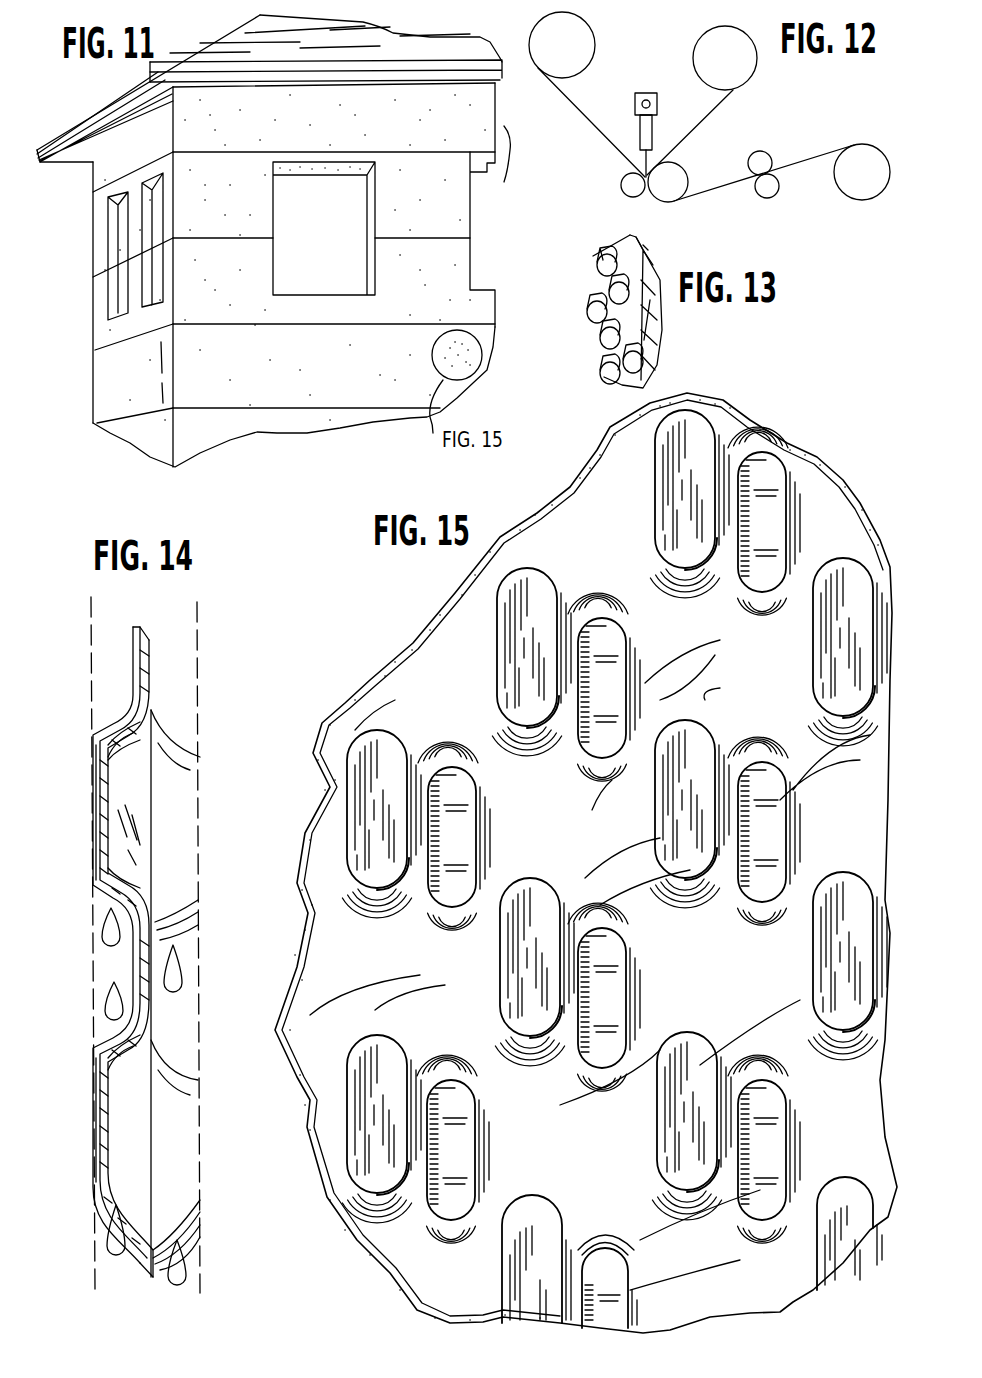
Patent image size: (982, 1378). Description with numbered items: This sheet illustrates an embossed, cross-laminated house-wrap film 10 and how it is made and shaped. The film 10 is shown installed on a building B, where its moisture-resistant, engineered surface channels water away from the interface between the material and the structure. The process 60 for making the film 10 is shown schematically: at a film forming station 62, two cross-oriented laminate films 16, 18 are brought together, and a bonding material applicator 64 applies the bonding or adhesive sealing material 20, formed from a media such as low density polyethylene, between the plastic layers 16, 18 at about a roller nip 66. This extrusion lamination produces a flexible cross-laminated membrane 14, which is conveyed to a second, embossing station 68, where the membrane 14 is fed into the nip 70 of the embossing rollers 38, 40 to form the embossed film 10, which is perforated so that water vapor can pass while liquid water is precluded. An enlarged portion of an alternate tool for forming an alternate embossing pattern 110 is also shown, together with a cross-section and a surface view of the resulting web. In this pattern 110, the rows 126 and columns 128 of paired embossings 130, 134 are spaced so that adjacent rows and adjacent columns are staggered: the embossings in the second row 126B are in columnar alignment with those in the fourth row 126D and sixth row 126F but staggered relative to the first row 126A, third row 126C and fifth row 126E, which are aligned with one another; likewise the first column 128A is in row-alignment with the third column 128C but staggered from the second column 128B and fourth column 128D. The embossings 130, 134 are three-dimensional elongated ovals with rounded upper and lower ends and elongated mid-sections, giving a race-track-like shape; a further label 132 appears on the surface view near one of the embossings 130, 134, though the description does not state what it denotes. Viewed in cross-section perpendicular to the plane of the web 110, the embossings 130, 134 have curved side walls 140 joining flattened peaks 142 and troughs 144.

In FIG. 11, the embossed cross-laminated film 10 is at (121, 336).
In FIG. 12, the embossed cross-laminated film 10 is at (807, 155).
In FIG. 11, the cross-laminated membrane 14 is at (159, 356).
In FIG. 11, the building B is at (508, 169).
In FIG. 12, the cross-oriented laminate film 16 is at (577, 107).
In FIG. 12, the cross-oriented laminate film 18 is at (712, 120).
In FIG. 12, the bonding material 20 is at (637, 153).
In FIG. 12, the embossing roller 38 is at (763, 157).
In FIG. 12, the embossing roller 40 is at (775, 197).
In FIG. 12, the process 60 is at (640, 70).
In FIG. 12, the station 62 is at (660, 86).
In FIG. 12, the bonding material applicator 64 is at (653, 127).
In FIG. 12, the roller nip 66 is at (640, 197).
In FIG. 12, the embossing station 68 is at (792, 138).
In FIG. 12, the nip 70 is at (720, 187).
In FIG. 15, the alternate embossing pattern 110 is at (775, 404).
In FIG. 15, the rows 126 is at (492, 613).
In FIG. 15, the first row 126A is at (643, 527).
In FIG. 15, the second row 126B is at (490, 692).
In FIG. 15, the third row 126C is at (342, 815).
In FIG. 15, the fourth row 126D is at (502, 967).
In FIG. 15, the fifth row 126E is at (348, 1117).
In FIG. 15, the sixth row 126F is at (502, 1282).
In FIG. 15, the columns 128 is at (560, 578).
In FIG. 15, the first column 128A is at (373, 693).
In FIG. 15, the second column 128B is at (568, 598).
In FIG. 15, the third column 128C is at (723, 430).
In FIG. 15, the fourth column 128D is at (852, 555).
In FIG. 15, the embossing 130 is at (497, 875).
In FIG. 15, the wrinkle 132 is at (572, 1072).
In FIG. 15, the embossing 134 is at (593, 937).
In FIG. 14, the curved side walls 140 is at (117, 713).
In FIG. 14, the flattened peaks 142 is at (93, 823).
In FIG. 14, the troughs 144 is at (137, 958).